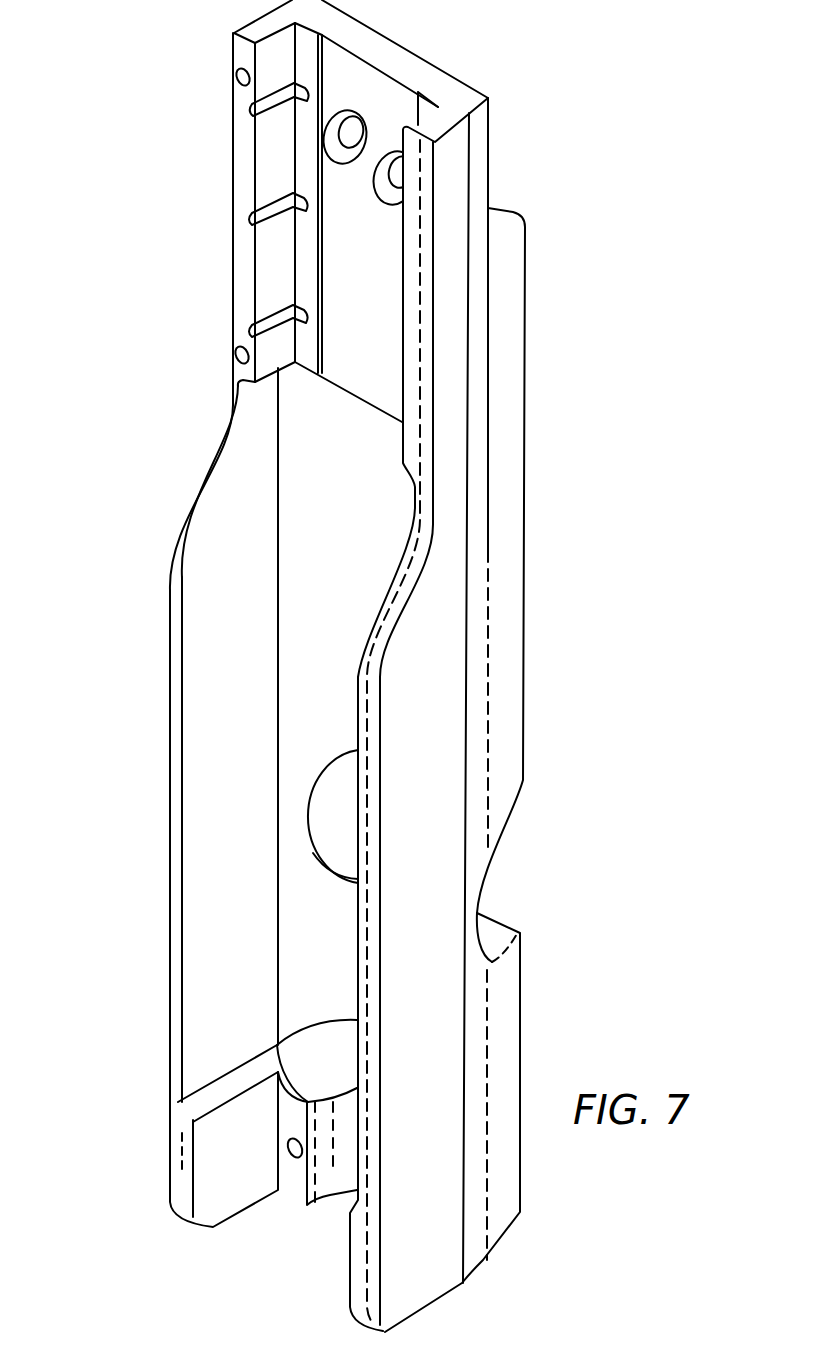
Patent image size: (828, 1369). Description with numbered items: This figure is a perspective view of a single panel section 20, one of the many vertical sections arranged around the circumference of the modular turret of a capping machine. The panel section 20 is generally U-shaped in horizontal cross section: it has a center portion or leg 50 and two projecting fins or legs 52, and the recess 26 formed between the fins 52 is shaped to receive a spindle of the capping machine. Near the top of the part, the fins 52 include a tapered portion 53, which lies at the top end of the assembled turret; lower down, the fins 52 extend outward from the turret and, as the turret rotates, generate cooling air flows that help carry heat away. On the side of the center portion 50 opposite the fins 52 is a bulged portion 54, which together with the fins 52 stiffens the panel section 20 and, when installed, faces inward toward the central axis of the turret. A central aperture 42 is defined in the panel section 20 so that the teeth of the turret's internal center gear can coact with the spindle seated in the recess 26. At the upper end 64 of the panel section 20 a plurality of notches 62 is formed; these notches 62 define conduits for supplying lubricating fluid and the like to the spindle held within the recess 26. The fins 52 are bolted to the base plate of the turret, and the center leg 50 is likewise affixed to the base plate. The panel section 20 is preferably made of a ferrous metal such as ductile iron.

The panel section 20 is at (130, 163).
The recess 26 is at (318, 560).
The central aperture 42 is at (337, 858).
The center portion 50 is at (300, 690).
The fin 52 is at (200, 640).
The tapered portion 53 is at (215, 466).
The bulged portion 54 is at (530, 290).
The notch 62 is at (233, 112).
The upper end 64 is at (208, 252).